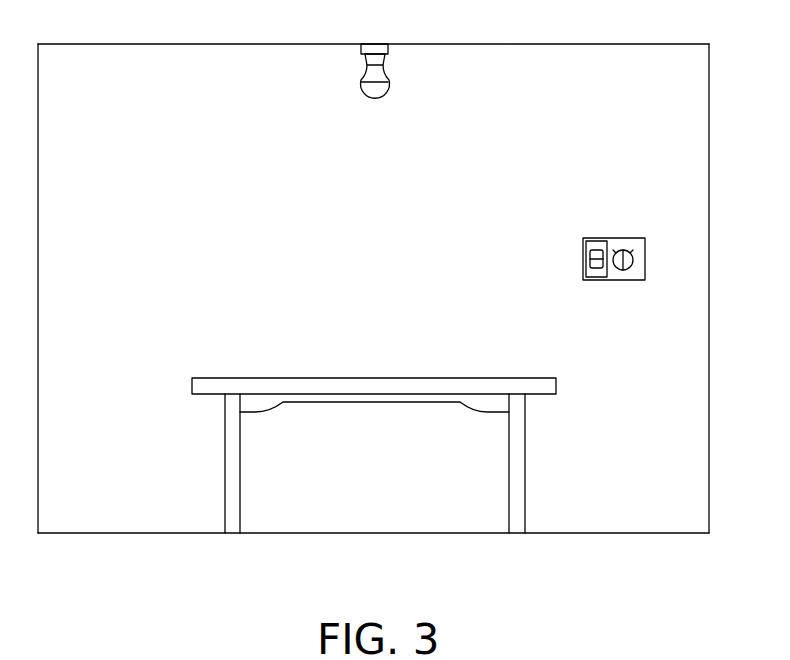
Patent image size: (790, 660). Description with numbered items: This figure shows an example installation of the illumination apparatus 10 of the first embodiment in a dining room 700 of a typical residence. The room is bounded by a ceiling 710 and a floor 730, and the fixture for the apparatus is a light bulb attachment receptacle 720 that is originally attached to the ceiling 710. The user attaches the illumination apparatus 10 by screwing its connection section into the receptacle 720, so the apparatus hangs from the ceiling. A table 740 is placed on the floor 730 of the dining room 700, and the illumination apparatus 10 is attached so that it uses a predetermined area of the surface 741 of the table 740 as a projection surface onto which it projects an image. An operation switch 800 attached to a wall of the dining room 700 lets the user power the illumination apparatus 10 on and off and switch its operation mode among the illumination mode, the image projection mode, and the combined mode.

The dining room 700 is at (183, 184).
The ceiling 710 is at (306, 44).
The floor 730 is at (583, 533).
The light bulb attachment receptacle 720 is at (388, 47).
The illumination apparatus 10 is at (400, 84).
The table 740 is at (568, 374).
The surface 741 is at (427, 377).
The operation switch 800 is at (615, 238).